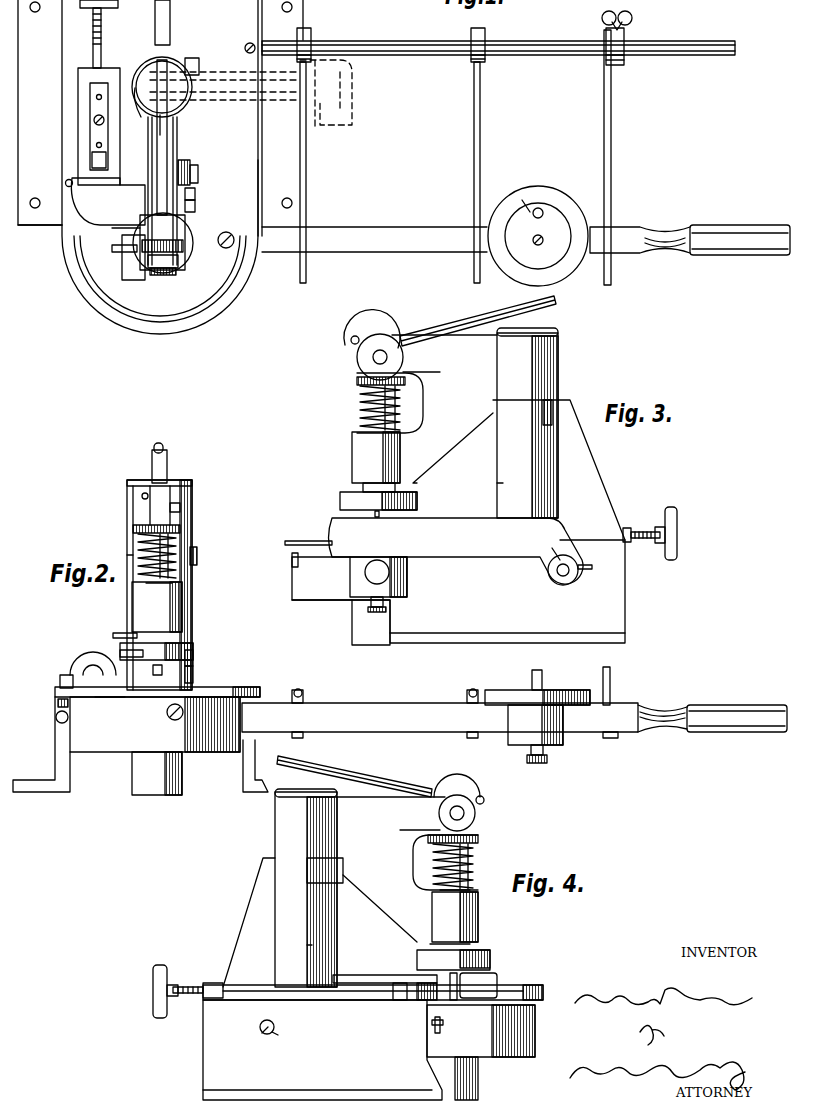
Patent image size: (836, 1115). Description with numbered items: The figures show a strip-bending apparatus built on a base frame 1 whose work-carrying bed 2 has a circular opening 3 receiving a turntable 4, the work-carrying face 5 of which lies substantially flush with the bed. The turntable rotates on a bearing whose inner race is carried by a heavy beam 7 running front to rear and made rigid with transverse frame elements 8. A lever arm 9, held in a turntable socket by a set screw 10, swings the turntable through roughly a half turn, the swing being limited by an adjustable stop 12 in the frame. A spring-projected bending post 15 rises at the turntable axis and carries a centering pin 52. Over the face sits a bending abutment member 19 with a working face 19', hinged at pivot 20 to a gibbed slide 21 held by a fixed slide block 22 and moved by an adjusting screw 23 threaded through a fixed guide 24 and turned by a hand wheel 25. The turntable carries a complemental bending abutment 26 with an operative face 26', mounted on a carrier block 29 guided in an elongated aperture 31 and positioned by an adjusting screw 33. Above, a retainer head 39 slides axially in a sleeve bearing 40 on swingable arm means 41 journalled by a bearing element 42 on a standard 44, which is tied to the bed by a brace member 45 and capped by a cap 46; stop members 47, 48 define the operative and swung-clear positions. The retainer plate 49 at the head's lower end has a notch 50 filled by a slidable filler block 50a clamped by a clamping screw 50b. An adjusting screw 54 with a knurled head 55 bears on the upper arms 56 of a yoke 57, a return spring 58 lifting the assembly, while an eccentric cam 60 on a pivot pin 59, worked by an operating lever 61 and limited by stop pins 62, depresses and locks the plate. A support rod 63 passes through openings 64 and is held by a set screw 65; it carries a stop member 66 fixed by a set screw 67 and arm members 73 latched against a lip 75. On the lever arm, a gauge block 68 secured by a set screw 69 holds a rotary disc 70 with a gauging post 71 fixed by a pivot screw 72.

In FIG. 1, the base frame 1 is at (38, 224).
In FIG. 3, the base frame 1 is at (620, 605).
In FIG. 2, the base frame 1 is at (60, 741).
In FIG. 4, the base frame 1 is at (210, 1055).
In FIG. 1, the work-carrying bed 2 is at (72, 268).
In FIG. 3, the work-carrying bed 2 is at (306, 542).
In FIG. 2, the work-carrying bed 2 is at (248, 688).
In FIG. 4, the work-carrying bed 2 is at (527, 1000).
In FIG. 1, the circular opening 3 is at (228, 283).
In FIG. 1, the turntable 4 is at (95, 290).
In FIG. 3, the turntable 4 is at (300, 600).
In FIG. 2, the turntable 4 is at (101, 748).
In FIG. 4, the turntable 4 is at (535, 1030).
In FIG. 1, the work-carrying face 5 is at (107, 297).
In FIG. 3, the beam 7 is at (355, 631).
In FIG. 2, the beam 7 is at (135, 786).
In FIG. 4, the beam 7 is at (478, 1080).
In FIG. 2, the transverse frame elements 8 is at (70, 746).
In FIG. 1, the lever arm 9 is at (354, 253).
In FIG. 3, the lever arm 9 is at (389, 573).
In FIG. 2, the lever arm 9 is at (410, 704).
In FIG. 1, the set screw 10 is at (232, 245).
In FIG. 2, the adjustable stop 12 is at (56, 717).
In FIG. 4, the adjustable stop 12 is at (443, 1025).
In FIG. 2, the bending post 15 is at (154, 690).
In FIG. 4, the bending post 15 is at (456, 996).
In FIG. 1, the bending abutment member 19 is at (108, 201).
In FIG. 2, the bending abutment member 19 is at (115, 710).
In FIG. 4, the bending abutment member 19 is at (385, 967).
In FIG. 1, the working face 19' is at (113, 235).
In FIG. 2, the working face 19' is at (103, 702).
In FIG. 1, the hinge pivot 20 is at (65, 183).
In FIG. 2, the hinge pivot 20 is at (60, 680).
In FIG. 4, the hinge pivot 20 is at (399, 1001).
In FIG. 1, the gibbed slide 21 is at (78, 138).
In FIG. 4, the gibbed slide 21 is at (340, 1001).
In FIG. 1, the slide block 22 is at (90, 101).
In FIG. 1, the adjusting screw 23 is at (93, 45).
In FIG. 3, the adjusting screw 23 is at (633, 545).
In FIG. 4, the adjusting screw 23 is at (225, 1003).
In FIG. 1, the fixed guide 24 is at (112, 4).
In FIG. 3, the fixed guide 24 is at (620, 528).
In FIG. 4, the fixed guide 24 is at (212, 983).
In FIG. 3, the hand wheel 25 is at (667, 510).
In FIG. 2, the hand wheel 25 is at (78, 662).
In FIG. 4, the hand wheel 25 is at (165, 965).
In FIG. 1, the bending abutment 26 is at (178, 236).
In FIG. 2, the bending abutment 26 is at (205, 678).
In FIG. 2, the operative face 26' is at (205, 662).
In FIG. 1, the carrier block 29 is at (195, 197).
In FIG. 1, the elongated aperture 31 is at (198, 178).
In FIG. 1, the adjusting screw 33 is at (190, 168).
In FIG. 3, the adjusting screw 33 is at (292, 560).
In FIG. 2, the adjusting screw 33 is at (169, 715).
In FIG. 3, the retainer head 39 is at (366, 434).
In FIG. 2, the retainer head 39 is at (148, 583).
In FIG. 4, the retainer head 39 is at (470, 884).
In FIG. 3, the sleeve bearing 40 is at (352, 468).
In FIG. 2, the sleeve bearing 40 is at (182, 615).
In FIG. 4, the sleeve bearing 40 is at (480, 918).
In FIG. 1, the arm means 41 is at (152, 150).
In FIG. 3, the arm means 41 is at (440, 458).
In FIG. 2, the arm means 41 is at (170, 500).
In FIG. 4, the arm means 41 is at (372, 903).
In FIG. 3, the bearing element 42 is at (558, 365).
In FIG. 2, the bearing element 42 is at (133, 513).
In FIG. 4, the bearing element 42 is at (277, 837).
In FIG. 1, the standard 44 is at (183, 107).
In FIG. 3, the standard 44 is at (500, 484).
In FIG. 2, the standard 44 is at (193, 593).
In FIG. 4, the standard 44 is at (332, 945).
In FIG. 1, the brace member 45 is at (170, 22).
In FIG. 3, the brace member 45 is at (559, 470).
In FIG. 4, the brace member 45 is at (250, 905).
In FIG. 1, the cap 46 is at (150, 65).
In FIG. 3, the cap 46 is at (545, 331).
In FIG. 2, the cap 46 is at (173, 484).
In FIG. 4, the cap 46 is at (283, 797).
In FIG. 1, the stop member 47 is at (140, 118).
In FIG. 2, the stop member 47 is at (130, 555).
In FIG. 4, the stop member 47 is at (340, 862).
In FIG. 1, the stop member 48 is at (193, 70).
In FIG. 3, the stop member 48 is at (543, 416).
In FIG. 2, the stop member 48 is at (197, 555).
In FIG. 1, the retainer plate 49 is at (124, 265).
In FIG. 3, the retainer plate 49 is at (345, 500).
In FIG. 2, the retainer plate 49 is at (193, 650).
In FIG. 4, the retainer plate 49 is at (491, 961).
In FIG. 4, the notch 50 is at (425, 956).
In FIG. 1, the filler block 50a is at (128, 250).
In FIG. 2, the filler block 50a is at (125, 652).
In FIG. 2, the clamping screw 50b is at (130, 633).
In FIG. 2, the centering pin 52 is at (158, 670).
In FIG. 4, the centering pin 52 is at (458, 977).
In FIG. 3, the adjusting screw 54 is at (368, 403).
In FIG. 2, the adjusting screw 54 is at (178, 570).
In FIG. 4, the adjusting screw 54 is at (478, 852).
In FIG. 1, the knurled head 55 is at (188, 250).
In FIG. 3, the knurled head 55 is at (358, 381).
In FIG. 2, the knurled head 55 is at (135, 530).
In FIG. 4, the knurled head 55 is at (480, 838).
In FIG. 3, the upper arms 56 is at (392, 345).
In FIG. 4, the upper arms 56 is at (475, 813).
In FIG. 3, the yoke 57 is at (420, 405).
In FIG. 4, the yoke 57 is at (415, 860).
In FIG. 3, the return spring 58 is at (368, 420).
In FIG. 2, the return spring 58 is at (178, 545).
In FIG. 4, the return spring 58 is at (475, 868).
In FIG. 3, the pivot pin 59 is at (372, 361).
In FIG. 2, the pivot pin 59 is at (180, 508).
In FIG. 4, the pivot pin 59 is at (450, 814).
In FIG. 1, the eccentric cam 60 is at (168, 272).
In FIG. 3, the eccentric cam 60 is at (372, 318).
In FIG. 2, the eccentric cam 60 is at (152, 468).
In FIG. 4, the eccentric cam 60 is at (452, 782).
In FIG. 1, the operating lever 61 is at (166, 136).
In FIG. 3, the operating lever 61 is at (456, 326).
In FIG. 2, the operating lever 61 is at (155, 452).
In FIG. 4, the operating lever 61 is at (372, 778).
In FIG. 1, the stop pins 62 is at (152, 276).
In FIG. 3, the stop pins 62 is at (351, 340).
In FIG. 2, the stop pins 62 is at (142, 495).
In FIG. 4, the stop pins 62 is at (484, 800).
In FIG. 1, the support rod 63 is at (388, 32).
In FIG. 3, the support rod 63 is at (555, 575).
In FIG. 2, the support rod 63 is at (58, 703).
In FIG. 4, the support rod 63 is at (275, 1025).
In FIG. 4, the openings 64 is at (274, 1032).
In FIG. 1, the set screw 65 is at (248, 44).
In FIG. 1, the stop member 66 is at (611, 142).
In FIG. 3, the stop member 66 is at (476, 554).
In FIG. 2, the stop member 66 is at (611, 682).
In FIG. 4, the stop member 66 is at (497, 980).
In FIG. 1, the set screw 67 is at (617, 15).
In FIG. 3, the set screw 67 is at (586, 570).
In FIG. 1, the gauge block 68 is at (565, 280).
In FIG. 3, the gauge block 68 is at (350, 577).
In FIG. 2, the gauge block 68 is at (562, 690).
In FIG. 3, the set screw 69 is at (386, 603).
In FIG. 2, the set screw 69 is at (547, 753).
In FIG. 1, the rotary disc 70 is at (528, 210).
In FIG. 1, the gauging post 71 is at (545, 208).
In FIG. 2, the gauging post 71 is at (533, 675).
In FIG. 1, the pivot screw 72 is at (539, 246).
In FIG. 1, the arm members 73 is at (307, 178).
In FIG. 2, the arm members 73 is at (304, 691).
In FIG. 3, the lip 75 is at (562, 565).
In FIG. 4, the lip 75 is at (265, 1030).